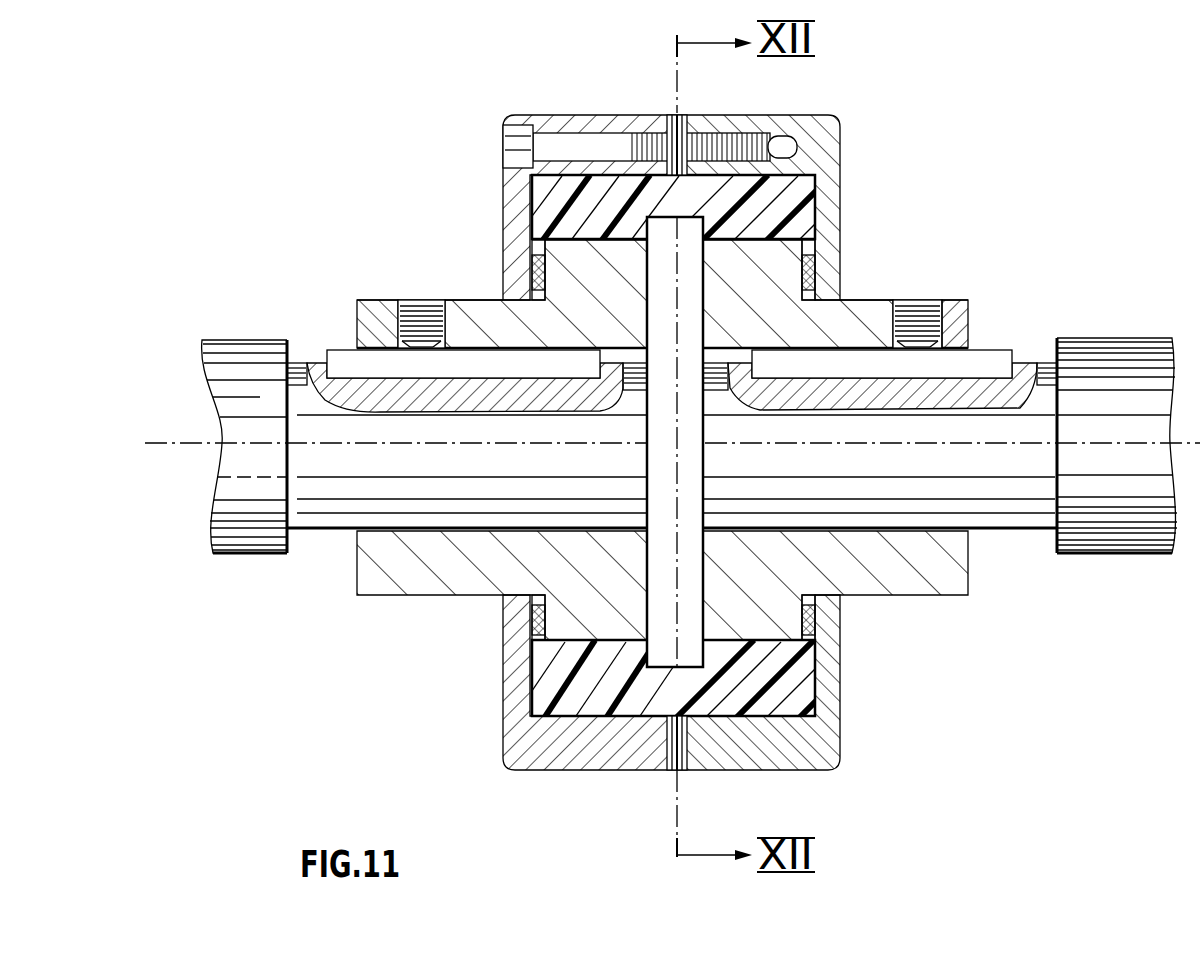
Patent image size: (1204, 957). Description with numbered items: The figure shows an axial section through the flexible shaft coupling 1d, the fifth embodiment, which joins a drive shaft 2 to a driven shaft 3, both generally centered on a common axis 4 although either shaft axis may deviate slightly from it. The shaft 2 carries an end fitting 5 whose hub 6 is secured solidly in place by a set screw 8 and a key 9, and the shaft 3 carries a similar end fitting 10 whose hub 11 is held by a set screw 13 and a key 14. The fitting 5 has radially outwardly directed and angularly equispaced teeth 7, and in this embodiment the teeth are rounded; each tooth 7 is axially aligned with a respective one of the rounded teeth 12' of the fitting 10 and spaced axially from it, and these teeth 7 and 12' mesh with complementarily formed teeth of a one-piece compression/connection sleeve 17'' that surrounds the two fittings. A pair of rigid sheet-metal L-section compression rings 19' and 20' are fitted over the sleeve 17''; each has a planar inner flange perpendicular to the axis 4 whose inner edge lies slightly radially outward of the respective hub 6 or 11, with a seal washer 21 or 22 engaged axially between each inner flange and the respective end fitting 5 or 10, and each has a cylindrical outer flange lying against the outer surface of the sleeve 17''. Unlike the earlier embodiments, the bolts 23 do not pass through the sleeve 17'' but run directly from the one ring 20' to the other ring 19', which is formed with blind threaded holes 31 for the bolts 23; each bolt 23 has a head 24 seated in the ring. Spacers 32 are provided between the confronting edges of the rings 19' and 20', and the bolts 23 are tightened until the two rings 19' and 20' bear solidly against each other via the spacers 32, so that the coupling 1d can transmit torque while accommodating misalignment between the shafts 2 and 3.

The coupling 1d is at (450, 678).
The drive shaft 2 is at (1013, 483).
The driven shaft 3 is at (320, 533).
The common axis 4 is at (158, 447).
The end fitting 5 is at (950, 598).
The hub 6 is at (965, 303).
The teeth 7 is at (833, 737).
The set screw 8 is at (927, 300).
The key 9 is at (992, 357).
The end fitting 10 is at (398, 585).
The hub 11 is at (370, 302).
The rounded teeth 12' is at (619, 196).
The set screw 13 is at (420, 302).
The key 14 is at (342, 350).
The one-piece sleeve 17'' is at (722, 207).
The ring 19' is at (749, 678).
The ring 20' is at (627, 696).
The seal washer 21 is at (843, 618).
The seal washer 22 is at (533, 622).
The bolt 23 is at (593, 143).
The head 24 is at (517, 148).
The blind threaded holes 31 is at (793, 148).
The spacers 32 is at (676, 757).